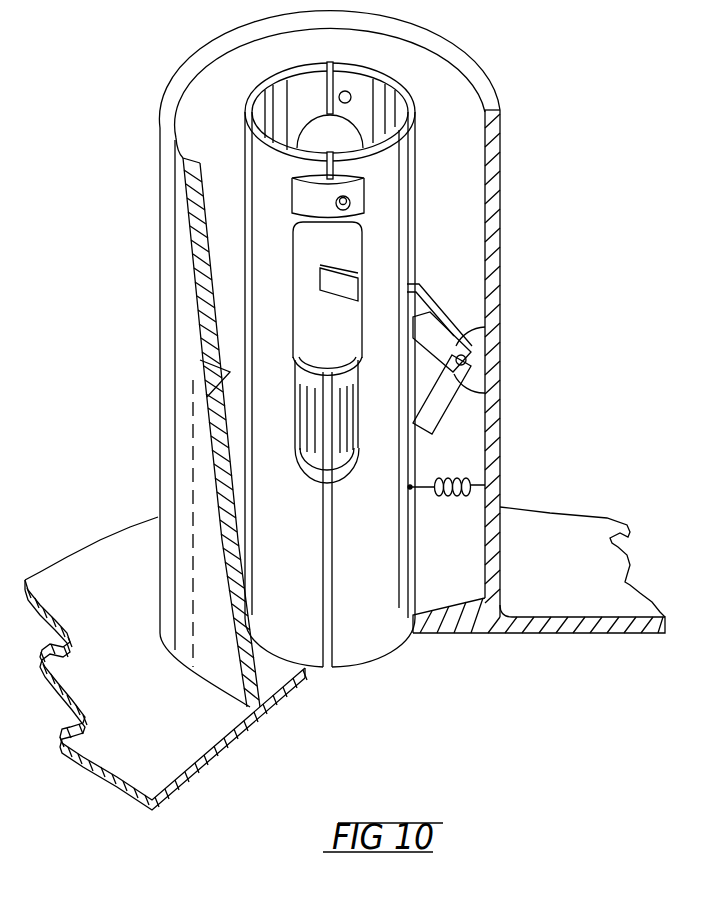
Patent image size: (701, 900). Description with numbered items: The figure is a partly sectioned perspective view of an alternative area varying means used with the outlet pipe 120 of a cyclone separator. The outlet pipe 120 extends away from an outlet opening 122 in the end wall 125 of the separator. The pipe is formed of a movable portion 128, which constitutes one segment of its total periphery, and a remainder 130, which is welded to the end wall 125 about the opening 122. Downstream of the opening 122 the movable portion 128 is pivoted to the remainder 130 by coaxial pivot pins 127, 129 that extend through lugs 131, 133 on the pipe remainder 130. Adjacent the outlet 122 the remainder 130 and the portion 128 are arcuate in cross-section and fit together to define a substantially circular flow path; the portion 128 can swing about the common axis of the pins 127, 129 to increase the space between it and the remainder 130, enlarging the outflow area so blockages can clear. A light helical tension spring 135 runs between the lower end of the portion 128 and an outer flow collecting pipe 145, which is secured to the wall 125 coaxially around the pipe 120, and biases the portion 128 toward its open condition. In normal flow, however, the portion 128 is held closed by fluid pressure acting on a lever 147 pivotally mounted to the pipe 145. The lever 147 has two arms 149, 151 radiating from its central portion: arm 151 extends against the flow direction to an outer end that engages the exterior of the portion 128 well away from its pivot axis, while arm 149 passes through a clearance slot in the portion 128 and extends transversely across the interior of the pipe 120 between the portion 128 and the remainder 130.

The outlet pipe 120 is at (397, 180).
The outlet opening 122 is at (352, 670).
The end wall 125 is at (566, 635).
The pivot pin 127 is at (350, 89).
The movable portion 128 is at (401, 563).
The pivot pin 129 is at (355, 203).
The remainder of the pipe 130 is at (253, 203).
The lug 131 is at (330, 86).
The lug 133 is at (305, 200).
The helical tension spring 135 is at (478, 482).
The outer flow collecting pipe 145 is at (500, 362).
The lever 147 is at (428, 317).
The arm 149 is at (333, 284).
The arm 151 is at (435, 416).